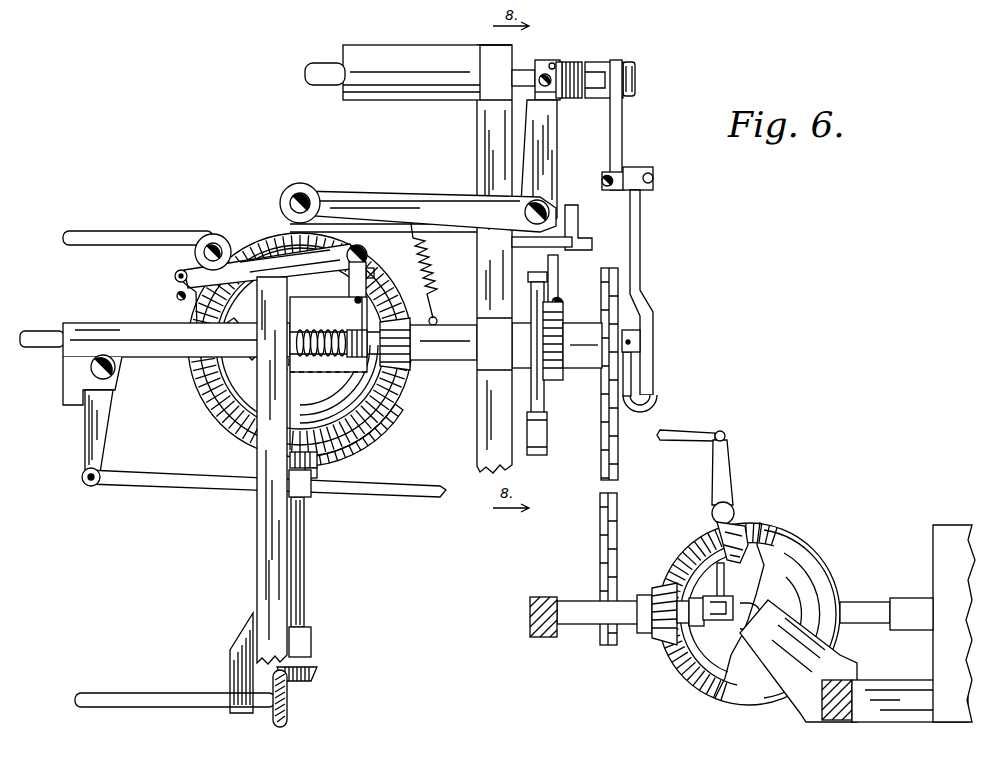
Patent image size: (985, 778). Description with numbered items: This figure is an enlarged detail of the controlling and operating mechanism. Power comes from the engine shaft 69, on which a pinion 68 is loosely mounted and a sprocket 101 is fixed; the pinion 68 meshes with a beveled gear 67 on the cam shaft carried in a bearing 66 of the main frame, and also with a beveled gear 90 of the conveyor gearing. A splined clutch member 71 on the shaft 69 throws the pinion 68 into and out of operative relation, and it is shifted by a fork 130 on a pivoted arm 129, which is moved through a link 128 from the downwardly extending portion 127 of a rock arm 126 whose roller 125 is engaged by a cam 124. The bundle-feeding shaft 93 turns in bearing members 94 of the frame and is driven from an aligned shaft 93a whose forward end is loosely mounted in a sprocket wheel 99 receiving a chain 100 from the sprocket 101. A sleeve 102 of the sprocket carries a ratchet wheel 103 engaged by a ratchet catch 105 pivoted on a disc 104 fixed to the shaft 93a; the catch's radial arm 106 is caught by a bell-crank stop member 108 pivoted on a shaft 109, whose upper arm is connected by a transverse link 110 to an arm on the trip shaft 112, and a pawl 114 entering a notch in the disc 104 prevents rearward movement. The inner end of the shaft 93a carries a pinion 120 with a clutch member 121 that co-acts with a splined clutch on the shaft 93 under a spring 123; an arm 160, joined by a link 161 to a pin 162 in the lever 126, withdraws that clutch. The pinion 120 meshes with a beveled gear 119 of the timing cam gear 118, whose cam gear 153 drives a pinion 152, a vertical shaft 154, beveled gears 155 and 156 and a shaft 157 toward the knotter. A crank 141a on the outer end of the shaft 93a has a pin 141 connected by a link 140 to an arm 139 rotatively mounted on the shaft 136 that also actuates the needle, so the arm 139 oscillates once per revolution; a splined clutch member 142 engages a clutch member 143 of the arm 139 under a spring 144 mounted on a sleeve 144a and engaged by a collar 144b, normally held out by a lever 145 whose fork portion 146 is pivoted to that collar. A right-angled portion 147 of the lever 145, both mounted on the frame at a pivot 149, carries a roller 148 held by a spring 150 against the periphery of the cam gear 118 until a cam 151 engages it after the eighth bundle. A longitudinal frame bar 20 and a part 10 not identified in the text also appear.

The frame post 10 is at (958, 610).
The longitudinally arranged bar 20 is at (900, 700).
The bearing 66 is at (800, 645).
The beveled gear 67 is at (748, 647).
The pinion 68 is at (652, 638).
The engine shaft 69 is at (645, 596).
The splined clutch member 71 is at (715, 635).
The beveled gear 90 is at (745, 532).
The shaft 93 is at (42, 347).
The shaft 93a is at (640, 337).
The bearing members 94 is at (255, 445).
The sprocket wheel 99 is at (620, 295).
The chain 100 is at (612, 468).
The sprocket 101 is at (597, 632).
The sleeve 102 is at (590, 368).
The ratchet wheel 103 is at (563, 330).
The disc 104 is at (533, 296).
The ratchet catch 105 is at (562, 300).
The radially extending arm 106 is at (558, 270).
The stop member 108 is at (585, 230).
The shaft 109 is at (590, 243).
The link 110 is at (548, 208).
The shaft 112 is at (102, 245).
The pawl 114 is at (538, 455).
The cam gear 118 is at (286, 236).
The beveled gear 119 is at (232, 410).
The pinion gear 120 is at (412, 342).
The clutch member 121 is at (410, 362).
The spring 123 is at (318, 338).
The cam 124 is at (190, 291).
The roller 125 is at (226, 238).
The rock arm 126 is at (178, 299).
The downwardly extending portion 127 is at (105, 438).
The link 128 is at (200, 488).
The pivoted arm 129 is at (730, 460).
The fork 130 is at (718, 575).
The shaft 136 is at (337, 80).
The arm 139 is at (624, 118).
The link 140 is at (641, 256).
The pin 141 is at (658, 404).
The crank 141a is at (632, 370).
The clutch member 142 is at (312, 362).
The clutch member 143 is at (595, 62).
The spring 144 is at (503, 130).
The sleeve 144a is at (560, 62).
The collar 144b is at (553, 63).
The lever 145 is at (558, 136).
The fork portion 146 is at (545, 100).
The right angularly extending portion 147 is at (422, 195).
The roller 148 is at (315, 180).
The pivot 149 is at (603, 178).
The spring 150 is at (431, 269).
The cam 151 is at (296, 252).
The pinion 152 is at (318, 462).
The cam gear 153 is at (385, 437).
The shaft 154 is at (305, 592).
The beveled gear 155 is at (305, 681).
The beveled gear 156 is at (285, 727).
The shaft 157 is at (182, 698).
The arm 160 is at (376, 272).
The link 161 is at (320, 270).
The pin 162 is at (176, 274).